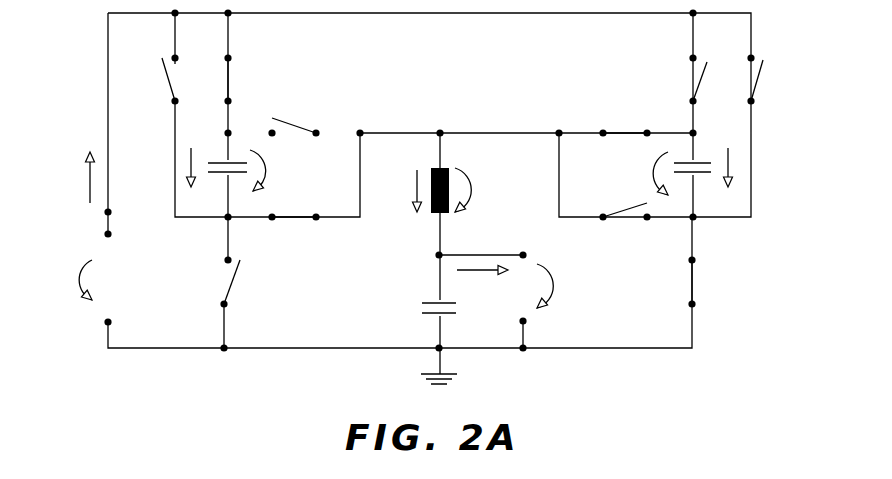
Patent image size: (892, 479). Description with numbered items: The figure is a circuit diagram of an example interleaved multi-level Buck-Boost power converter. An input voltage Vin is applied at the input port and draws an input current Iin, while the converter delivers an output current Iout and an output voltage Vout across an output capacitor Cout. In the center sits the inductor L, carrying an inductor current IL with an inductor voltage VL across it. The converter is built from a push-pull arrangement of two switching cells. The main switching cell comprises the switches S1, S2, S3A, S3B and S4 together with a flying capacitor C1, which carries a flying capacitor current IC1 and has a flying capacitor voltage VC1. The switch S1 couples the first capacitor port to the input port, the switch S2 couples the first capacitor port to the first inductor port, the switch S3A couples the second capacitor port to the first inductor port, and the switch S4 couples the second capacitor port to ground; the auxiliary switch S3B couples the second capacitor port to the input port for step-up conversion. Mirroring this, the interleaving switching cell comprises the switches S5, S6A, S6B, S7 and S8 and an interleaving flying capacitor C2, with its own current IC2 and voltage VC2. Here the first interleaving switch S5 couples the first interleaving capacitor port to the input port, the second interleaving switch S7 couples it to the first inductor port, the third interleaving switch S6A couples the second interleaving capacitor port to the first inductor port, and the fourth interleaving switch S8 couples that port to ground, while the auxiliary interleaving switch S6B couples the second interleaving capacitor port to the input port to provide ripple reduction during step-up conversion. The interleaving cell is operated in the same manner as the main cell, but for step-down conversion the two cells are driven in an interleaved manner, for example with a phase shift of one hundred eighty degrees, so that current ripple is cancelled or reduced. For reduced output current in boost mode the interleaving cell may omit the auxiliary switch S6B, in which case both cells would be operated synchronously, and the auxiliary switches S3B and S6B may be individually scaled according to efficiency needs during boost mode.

The first switch S1 is at (215, 79).
The second switch S2 is at (293, 118).
The third switch S3A is at (294, 228).
The auxiliary switch S3B is at (151, 79).
The fourth switch S4 is at (217, 281).
The first interleaving switch S5 is at (704, 281).
The third interleaving switch S6A is at (624, 223).
The auxiliary interleaving switch S6B is at (772, 79).
The second interleaving switch S7 is at (624, 122).
The fourth interleaving switch S8 is at (685, 79).
The flying capacitor C1 is at (223, 160).
The interleaving flying capacitor C2 is at (697, 160).
The output capacitor Cout is at (418, 319).
The inductor L is at (440, 190).
The input current Iin is at (72, 177).
The input voltage Vin is at (67, 281).
The flying capacitor current IC1 is at (188, 183).
The flying capacitor voltage VC1 is at (272, 172).
The inductor current IL is at (407, 191).
The inductor voltage VL is at (472, 191).
The interleaving flying capacitor current IC2 is at (726, 182).
The interleaving flying capacitor voltage VC2 is at (645, 175).
The output current Iout is at (482, 281).
The output voltage Vout is at (561, 287).